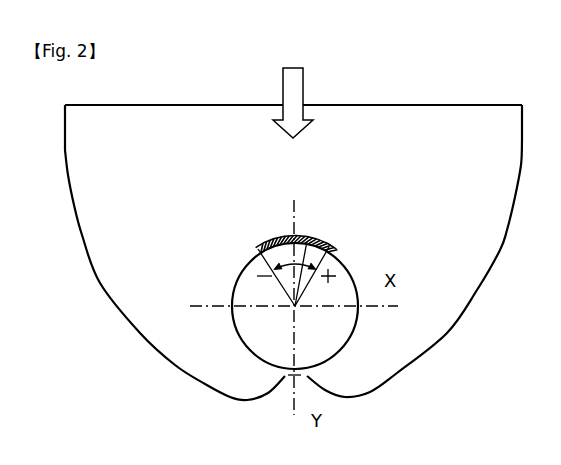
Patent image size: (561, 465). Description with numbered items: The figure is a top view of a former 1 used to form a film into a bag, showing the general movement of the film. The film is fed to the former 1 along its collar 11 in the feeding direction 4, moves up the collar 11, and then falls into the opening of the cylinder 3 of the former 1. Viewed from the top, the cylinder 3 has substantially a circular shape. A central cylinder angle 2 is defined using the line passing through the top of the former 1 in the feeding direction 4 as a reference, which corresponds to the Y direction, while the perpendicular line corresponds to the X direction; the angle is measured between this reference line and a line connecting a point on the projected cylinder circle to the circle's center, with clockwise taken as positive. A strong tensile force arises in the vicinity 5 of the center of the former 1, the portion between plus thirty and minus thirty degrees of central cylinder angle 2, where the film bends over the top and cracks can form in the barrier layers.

The former 1 is at (420, 95).
The collar 11 is at (147, 265).
The central cylinder angle 2 is at (313, 240).
The cylinder 3 is at (357, 320).
The feeding direction 4 is at (301, 102).
The vicinity of the center of the former 5 is at (262, 245).